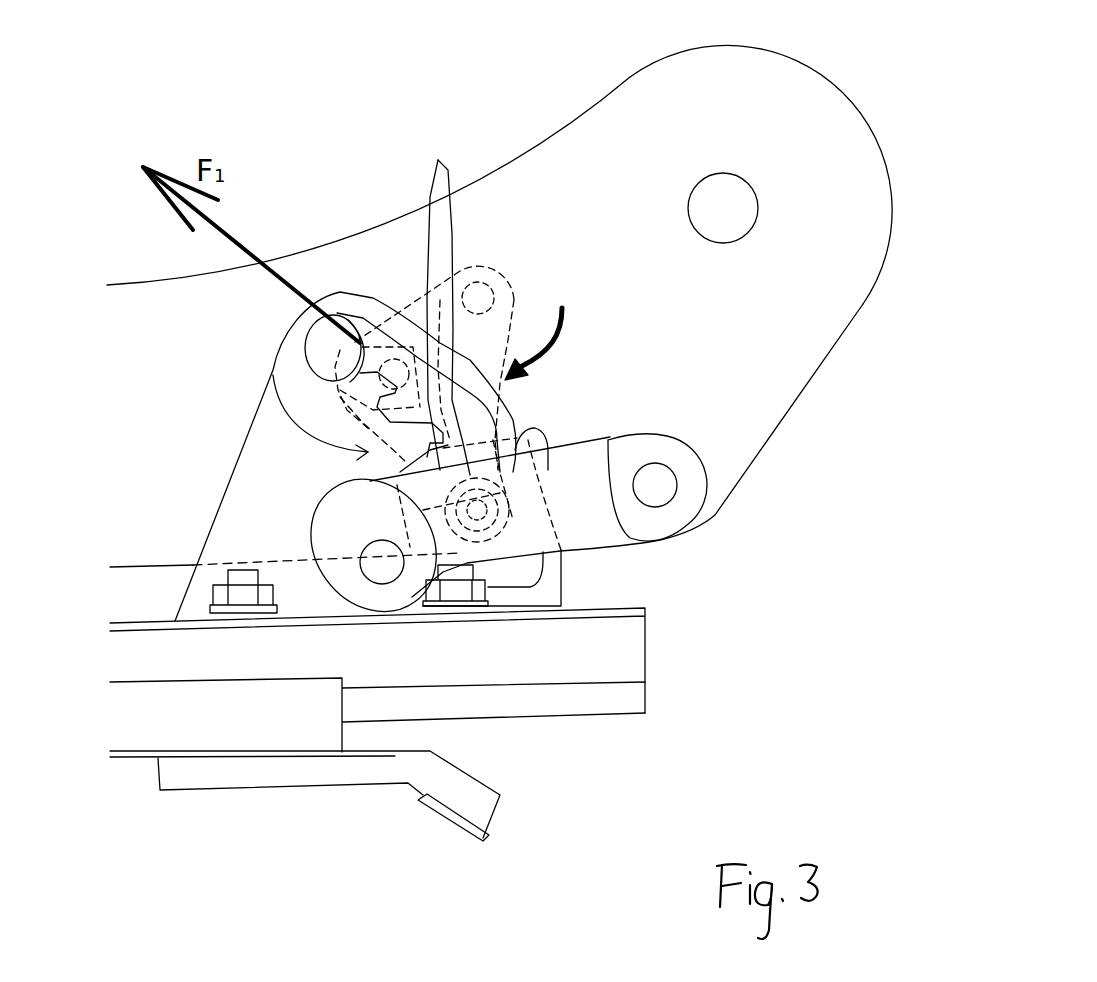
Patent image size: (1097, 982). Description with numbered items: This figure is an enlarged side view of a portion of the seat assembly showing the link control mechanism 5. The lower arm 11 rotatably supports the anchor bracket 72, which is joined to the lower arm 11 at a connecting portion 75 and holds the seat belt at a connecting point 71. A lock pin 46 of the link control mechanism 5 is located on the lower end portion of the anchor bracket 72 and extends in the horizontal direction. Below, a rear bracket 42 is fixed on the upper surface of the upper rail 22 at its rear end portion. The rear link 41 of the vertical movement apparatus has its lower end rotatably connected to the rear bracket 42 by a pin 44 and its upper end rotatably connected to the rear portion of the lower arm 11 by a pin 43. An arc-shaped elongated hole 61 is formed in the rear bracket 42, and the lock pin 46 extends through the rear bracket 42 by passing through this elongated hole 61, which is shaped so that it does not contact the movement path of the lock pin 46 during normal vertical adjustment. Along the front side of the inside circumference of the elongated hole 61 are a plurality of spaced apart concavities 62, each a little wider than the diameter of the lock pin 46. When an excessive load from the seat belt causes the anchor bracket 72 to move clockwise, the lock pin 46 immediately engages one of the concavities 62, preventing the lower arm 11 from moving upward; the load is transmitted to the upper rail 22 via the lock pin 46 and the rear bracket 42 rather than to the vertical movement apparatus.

The link control mechanism 5 is at (273, 370).
The lower arm 11 is at (543, 185).
The upper rail 22 is at (610, 655).
The rear link 41 is at (590, 530).
The rear bracket 42 is at (275, 441).
The pin 43 is at (662, 485).
The pin 44 is at (385, 573).
The lock pin 46 is at (561, 550).
The elongated hole 61 is at (352, 327).
The concavities 62 is at (320, 353).
The connecting point 71 is at (338, 345).
The anchor bracket 72 is at (412, 300).
The connecting portion 75 is at (480, 278).